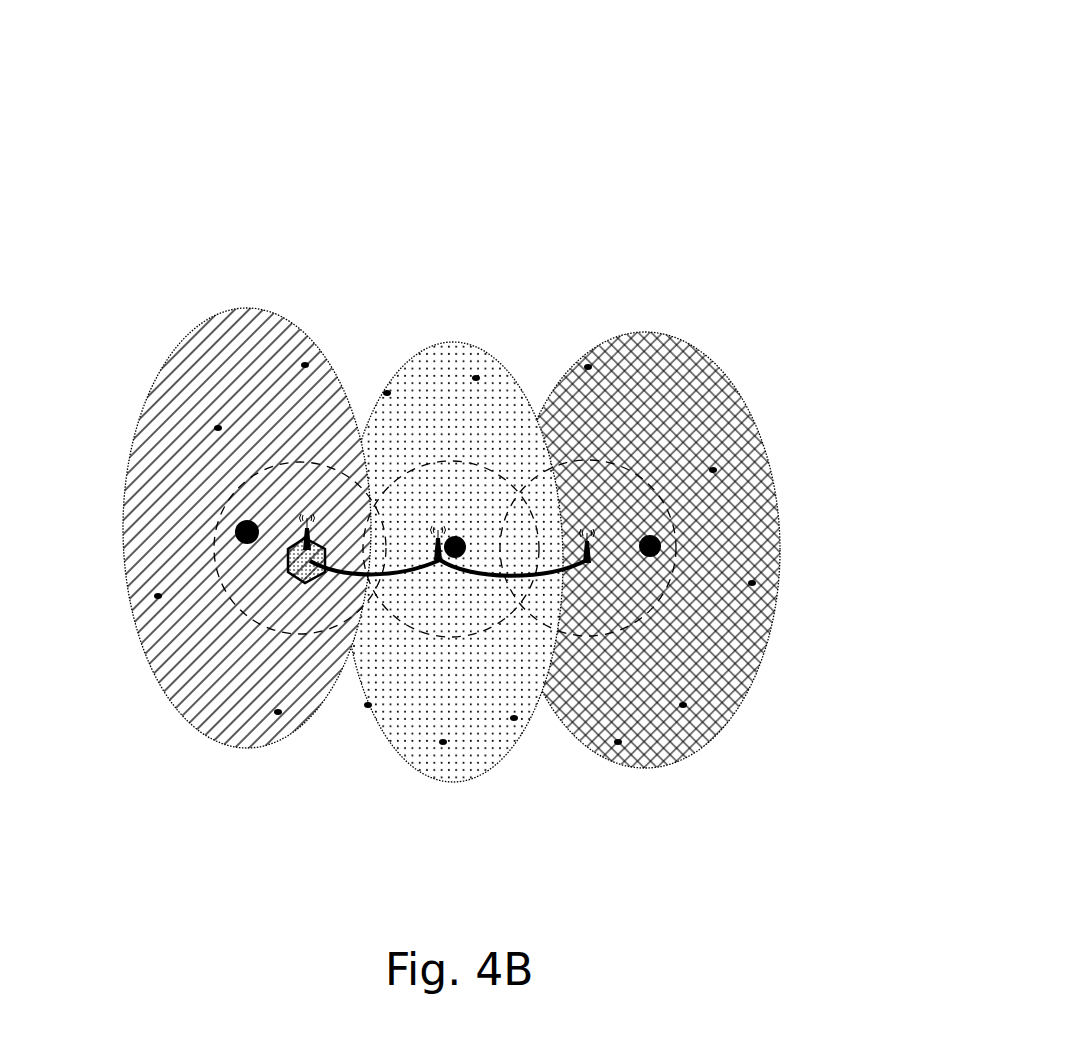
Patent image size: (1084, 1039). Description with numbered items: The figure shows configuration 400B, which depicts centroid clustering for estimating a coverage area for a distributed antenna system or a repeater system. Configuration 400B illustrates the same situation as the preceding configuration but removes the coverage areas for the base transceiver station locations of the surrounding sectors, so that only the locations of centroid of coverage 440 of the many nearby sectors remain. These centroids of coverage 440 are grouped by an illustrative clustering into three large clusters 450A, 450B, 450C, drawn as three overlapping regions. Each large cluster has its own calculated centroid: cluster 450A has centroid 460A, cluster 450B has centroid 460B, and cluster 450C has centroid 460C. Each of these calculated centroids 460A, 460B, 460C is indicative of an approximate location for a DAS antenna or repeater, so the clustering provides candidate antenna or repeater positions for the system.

The configuration 400B is at (718, 94).
The location of centroid of coverage 440 is at (588, 365).
The large cluster 450A is at (208, 738).
The large cluster 450B is at (398, 762).
The large cluster 450C is at (710, 745).
The centroid 460A is at (238, 522).
The centroid 460B is at (463, 556).
The centroid 460C is at (655, 535).